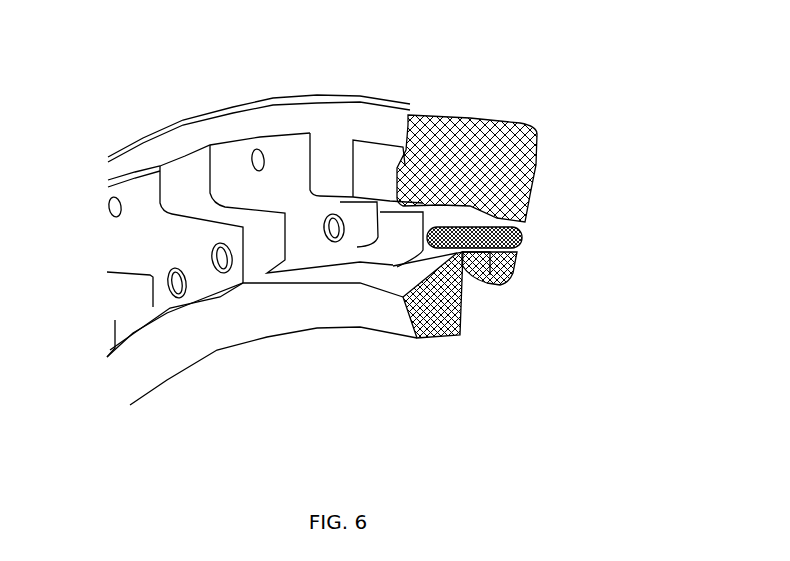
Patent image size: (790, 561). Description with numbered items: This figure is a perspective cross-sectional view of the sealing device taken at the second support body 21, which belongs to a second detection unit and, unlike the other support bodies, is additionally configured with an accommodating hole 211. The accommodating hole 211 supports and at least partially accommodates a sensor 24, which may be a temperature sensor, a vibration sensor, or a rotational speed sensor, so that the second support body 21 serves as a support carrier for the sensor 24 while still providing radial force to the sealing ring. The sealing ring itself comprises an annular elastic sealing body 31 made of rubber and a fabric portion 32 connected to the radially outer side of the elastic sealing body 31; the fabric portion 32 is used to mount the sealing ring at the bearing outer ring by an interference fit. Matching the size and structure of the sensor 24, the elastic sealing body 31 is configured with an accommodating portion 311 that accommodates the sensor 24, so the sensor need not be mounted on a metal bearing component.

The second support body 21 is at (369, 152).
The accommodating hole 211 is at (468, 252).
The sensor 24 is at (520, 255).
The elastic sealing body 31 is at (497, 216).
The accommodating portion 311 is at (485, 252).
The fabric portion 32 is at (500, 148).